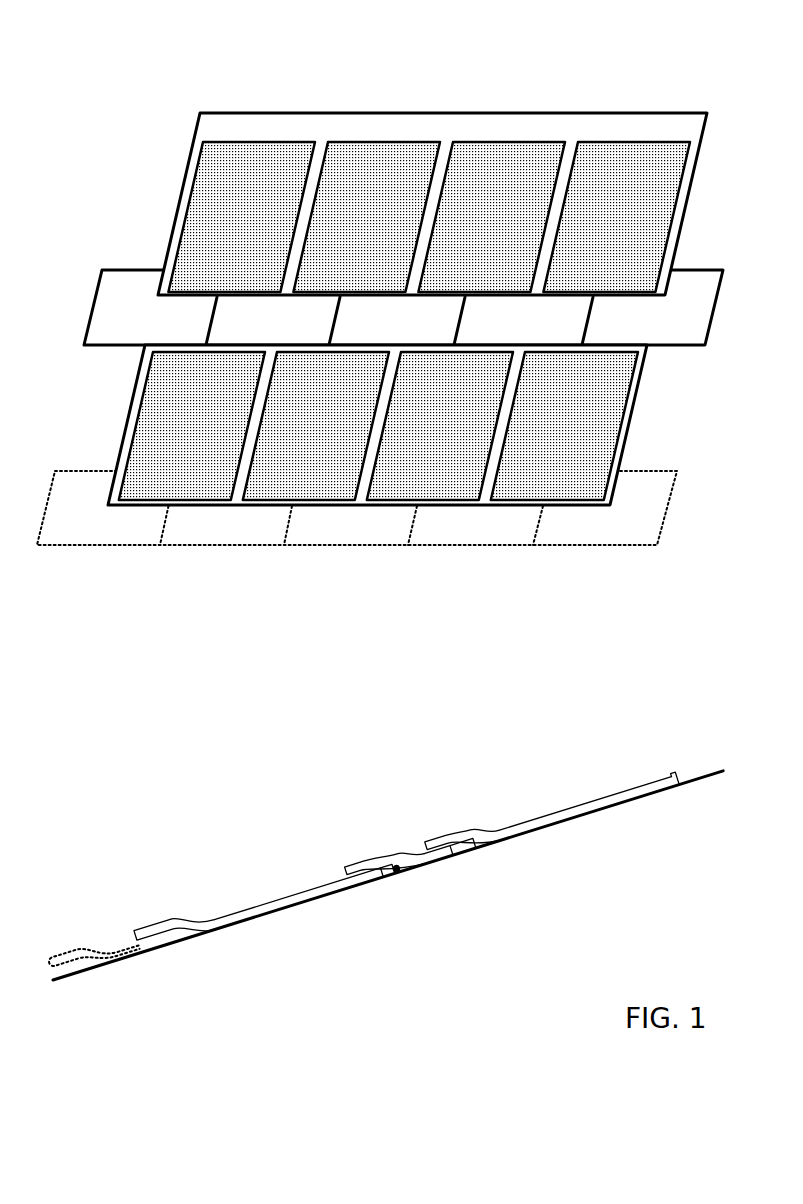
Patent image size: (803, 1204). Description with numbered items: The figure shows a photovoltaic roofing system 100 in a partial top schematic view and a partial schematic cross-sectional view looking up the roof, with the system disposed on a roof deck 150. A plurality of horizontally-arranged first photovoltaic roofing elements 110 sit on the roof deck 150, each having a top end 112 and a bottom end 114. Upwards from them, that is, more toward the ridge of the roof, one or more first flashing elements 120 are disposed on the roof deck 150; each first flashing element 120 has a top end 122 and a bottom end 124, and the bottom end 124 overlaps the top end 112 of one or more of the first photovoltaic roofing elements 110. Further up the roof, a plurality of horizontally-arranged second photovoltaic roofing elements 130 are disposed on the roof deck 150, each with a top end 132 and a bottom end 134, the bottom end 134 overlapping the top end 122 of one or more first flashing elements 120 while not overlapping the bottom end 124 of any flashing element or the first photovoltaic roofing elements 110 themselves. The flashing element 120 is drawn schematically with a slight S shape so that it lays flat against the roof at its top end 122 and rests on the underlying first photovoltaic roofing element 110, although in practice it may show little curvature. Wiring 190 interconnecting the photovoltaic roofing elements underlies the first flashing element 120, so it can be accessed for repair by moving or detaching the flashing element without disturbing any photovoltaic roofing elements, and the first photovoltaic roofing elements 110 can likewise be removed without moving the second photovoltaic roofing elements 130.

The photovoltaic roofing system 100 is at (388, 500).
The first photovoltaic roofing elements 110 is at (347, 660).
The top end of first photovoltaic roofing element 112 is at (378, 875).
The bottom end of first photovoltaic roofing element 114 is at (150, 932).
The first flashing elements 120 is at (376, 590).
The top end of first flashing element 122 is at (460, 857).
The bottom end of first flashing element 124 is at (362, 868).
The second photovoltaic roofing elements 130 is at (407, 487).
The top end of second photovoltaic roofing element 132 is at (668, 785).
The bottom end of second photovoltaic roofing element 134 is at (445, 838).
The roof deck 150 is at (278, 976).
The wiring 190 is at (397, 875).